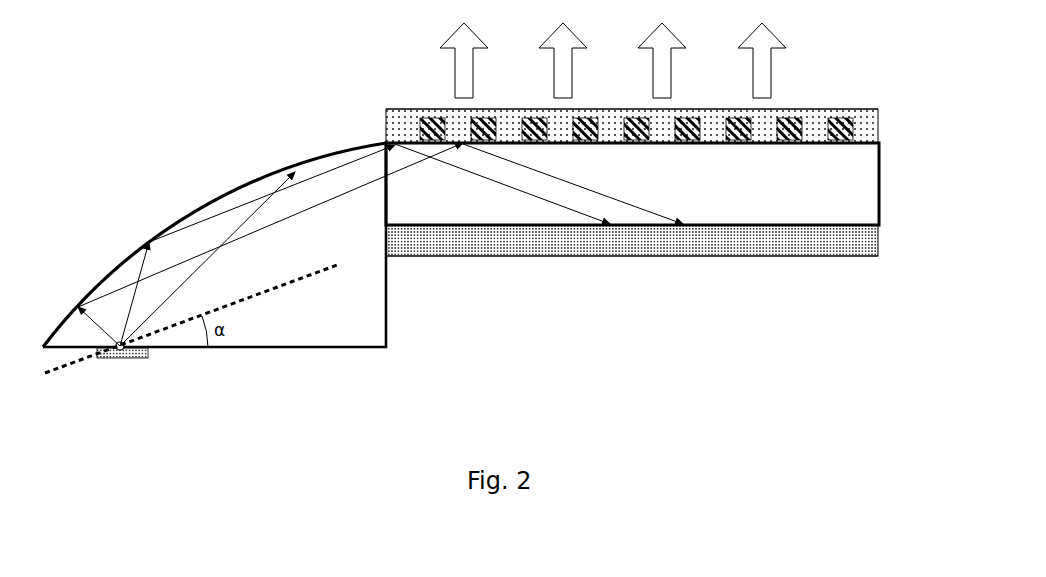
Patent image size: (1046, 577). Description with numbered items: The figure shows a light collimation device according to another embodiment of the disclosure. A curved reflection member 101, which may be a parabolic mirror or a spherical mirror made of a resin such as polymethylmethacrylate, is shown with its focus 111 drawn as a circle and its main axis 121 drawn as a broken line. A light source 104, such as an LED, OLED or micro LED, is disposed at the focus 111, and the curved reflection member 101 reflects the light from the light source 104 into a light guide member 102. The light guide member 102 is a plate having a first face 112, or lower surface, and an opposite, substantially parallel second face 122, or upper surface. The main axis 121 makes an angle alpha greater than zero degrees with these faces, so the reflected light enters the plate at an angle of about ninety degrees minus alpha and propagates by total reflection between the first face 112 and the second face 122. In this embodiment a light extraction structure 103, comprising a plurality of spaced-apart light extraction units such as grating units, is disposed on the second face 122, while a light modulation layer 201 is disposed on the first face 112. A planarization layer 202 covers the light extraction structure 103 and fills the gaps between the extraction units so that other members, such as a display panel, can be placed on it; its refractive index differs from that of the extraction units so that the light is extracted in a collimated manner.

The curved reflection member 101 is at (205, 206).
The light guide member 102 is at (881, 187).
The light extraction structure 103 is at (846, 119).
The light source 104 is at (147, 358).
The focus 111 is at (122, 358).
The first face 112 is at (877, 247).
The main axis 121 is at (57, 376).
The second face 122 is at (870, 138).
The light modulation layer 201 is at (838, 257).
The planarization layer 202 is at (828, 110).